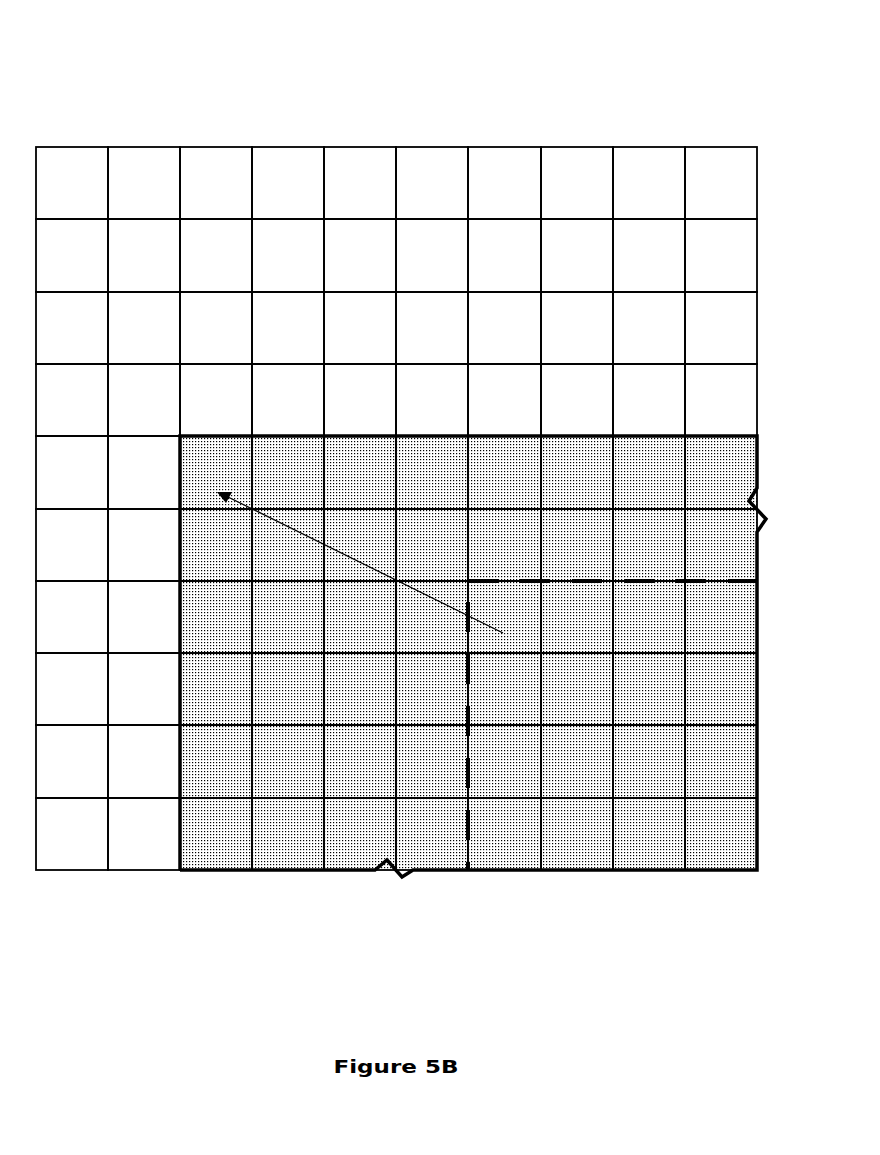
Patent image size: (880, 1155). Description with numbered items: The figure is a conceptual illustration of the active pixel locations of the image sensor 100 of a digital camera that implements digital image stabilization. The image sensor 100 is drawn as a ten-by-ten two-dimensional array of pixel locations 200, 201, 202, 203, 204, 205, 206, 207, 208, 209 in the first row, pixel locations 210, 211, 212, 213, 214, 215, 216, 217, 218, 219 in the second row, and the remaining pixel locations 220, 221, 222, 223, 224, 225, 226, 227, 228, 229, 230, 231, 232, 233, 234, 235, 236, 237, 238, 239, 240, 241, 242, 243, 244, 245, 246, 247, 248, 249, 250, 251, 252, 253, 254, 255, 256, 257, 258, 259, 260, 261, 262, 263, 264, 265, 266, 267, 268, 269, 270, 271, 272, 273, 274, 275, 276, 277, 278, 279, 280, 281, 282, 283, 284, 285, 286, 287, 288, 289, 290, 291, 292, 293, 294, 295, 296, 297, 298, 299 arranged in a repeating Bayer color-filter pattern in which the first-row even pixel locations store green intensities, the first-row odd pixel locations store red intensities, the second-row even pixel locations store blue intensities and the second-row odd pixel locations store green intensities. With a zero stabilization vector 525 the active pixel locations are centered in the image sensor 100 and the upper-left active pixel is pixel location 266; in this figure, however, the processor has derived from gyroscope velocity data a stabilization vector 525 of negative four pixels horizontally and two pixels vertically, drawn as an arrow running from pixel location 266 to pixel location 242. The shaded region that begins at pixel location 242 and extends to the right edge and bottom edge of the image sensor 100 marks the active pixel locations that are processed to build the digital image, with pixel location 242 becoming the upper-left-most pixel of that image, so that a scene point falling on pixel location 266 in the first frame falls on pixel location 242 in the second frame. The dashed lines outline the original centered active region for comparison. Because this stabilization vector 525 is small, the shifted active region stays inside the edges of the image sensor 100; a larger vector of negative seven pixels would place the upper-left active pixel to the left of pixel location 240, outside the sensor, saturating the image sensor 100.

The image sensor 100 is at (401, 495).
The stabilization vector 525 is at (340, 556).
The pixel location 200 is at (55, 175).
The pixel location 201 is at (127, 175).
The pixel location 202 is at (199, 175).
The pixel location 203 is at (271, 175).
The pixel location 204 is at (343, 175).
The pixel location 205 is at (415, 175).
The pixel location 206 is at (487, 175).
The pixel location 207 is at (560, 175).
The pixel location 208 is at (632, 175).
The pixel location 209 is at (704, 175).
The pixel location 210 is at (55, 247).
The pixel location 211 is at (127, 247).
The pixel location 212 is at (199, 247).
The pixel location 213 is at (271, 247).
The pixel location 214 is at (343, 247).
The pixel location 215 is at (415, 247).
The pixel location 216 is at (487, 247).
The pixel location 217 is at (560, 247).
The pixel location 218 is at (632, 247).
The pixel location 219 is at (704, 247).
The pixel location 220 is at (55, 320).
The pixel location 221 is at (127, 320).
The pixel location 222 is at (199, 320).
The pixel location 223 is at (271, 320).
The pixel location 224 is at (343, 320).
The pixel location 225 is at (415, 320).
The pixel location 226 is at (487, 320).
The pixel location 227 is at (560, 320).
The pixel location 228 is at (632, 320).
The pixel location 229 is at (704, 320).
The pixel location 230 is at (55, 392).
The pixel location 231 is at (127, 392).
The pixel location 232 is at (199, 392).
The pixel location 233 is at (271, 392).
The pixel location 234 is at (343, 392).
The pixel location 235 is at (415, 392).
The pixel location 236 is at (487, 392).
The pixel location 237 is at (560, 392).
The pixel location 238 is at (632, 392).
The pixel location 239 is at (704, 392).
The pixel location 240 is at (55, 464).
The pixel location 241 is at (127, 464).
The pixel location 242 is at (199, 464).
The pixel location 243 is at (271, 464).
The pixel location 244 is at (343, 464).
The pixel location 245 is at (415, 464).
The pixel location 246 is at (487, 464).
The pixel location 247 is at (560, 464).
The pixel location 248 is at (632, 464).
The pixel location 249 is at (704, 464).
The pixel location 250 is at (55, 537).
The pixel location 251 is at (127, 537).
The pixel location 252 is at (199, 537).
The pixel location 253 is at (271, 537).
The pixel location 254 is at (343, 537).
The pixel location 255 is at (415, 537).
The pixel location 256 is at (487, 537).
The pixel location 257 is at (560, 537).
The pixel location 258 is at (632, 537).
The pixel location 259 is at (704, 537).
The pixel location 260 is at (55, 609).
The pixel location 261 is at (127, 609).
The pixel location 262 is at (199, 609).
The pixel location 263 is at (271, 609).
The pixel location 264 is at (343, 609).
The pixel location 265 is at (415, 609).
The pixel location 266 is at (487, 609).
The pixel location 267 is at (560, 609).
The pixel location 268 is at (632, 609).
The pixel location 269 is at (704, 609).
The pixel location 270 is at (55, 681).
The pixel location 271 is at (127, 681).
The pixel location 272 is at (199, 681).
The pixel location 273 is at (271, 681).
The pixel location 274 is at (343, 681).
The pixel location 275 is at (415, 681).
The pixel location 276 is at (487, 681).
The pixel location 277 is at (560, 681).
The pixel location 278 is at (632, 681).
The pixel location 279 is at (704, 681).
The pixel location 280 is at (55, 753).
The pixel location 281 is at (127, 753).
The pixel location 282 is at (199, 753).
The pixel location 283 is at (271, 753).
The pixel location 284 is at (343, 753).
The pixel location 285 is at (415, 753).
The pixel location 286 is at (487, 753).
The pixel location 287 is at (560, 753).
The pixel location 288 is at (632, 753).
The pixel location 289 is at (704, 753).
The pixel location 290 is at (55, 826).
The pixel location 291 is at (127, 826).
The pixel location 292 is at (199, 826).
The pixel location 293 is at (271, 826).
The pixel location 294 is at (343, 826).
The pixel location 295 is at (415, 826).
The pixel location 296 is at (487, 826).
The pixel location 297 is at (560, 826).
The pixel location 298 is at (632, 826).
The pixel location 299 is at (704, 826).